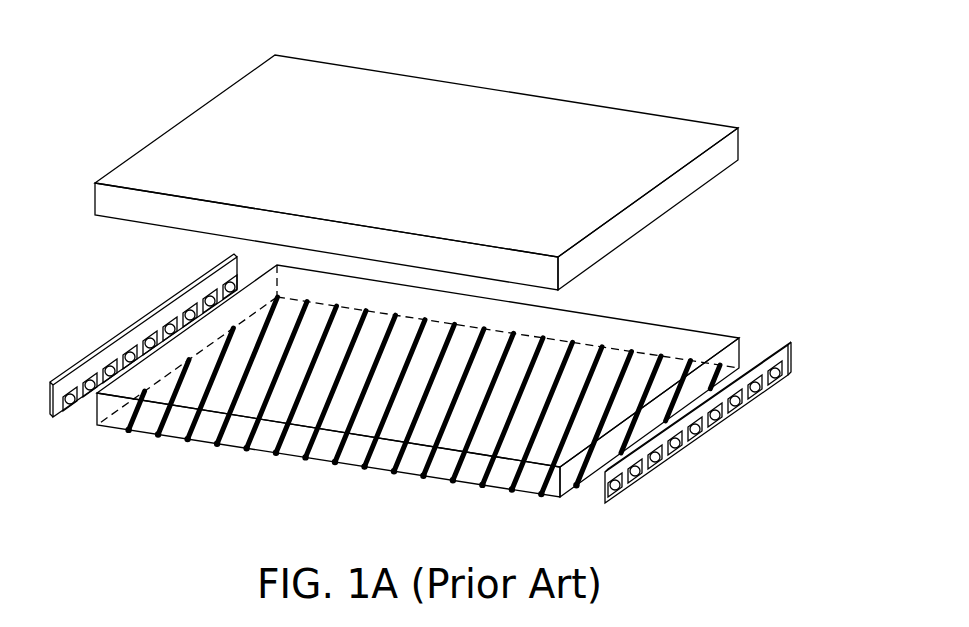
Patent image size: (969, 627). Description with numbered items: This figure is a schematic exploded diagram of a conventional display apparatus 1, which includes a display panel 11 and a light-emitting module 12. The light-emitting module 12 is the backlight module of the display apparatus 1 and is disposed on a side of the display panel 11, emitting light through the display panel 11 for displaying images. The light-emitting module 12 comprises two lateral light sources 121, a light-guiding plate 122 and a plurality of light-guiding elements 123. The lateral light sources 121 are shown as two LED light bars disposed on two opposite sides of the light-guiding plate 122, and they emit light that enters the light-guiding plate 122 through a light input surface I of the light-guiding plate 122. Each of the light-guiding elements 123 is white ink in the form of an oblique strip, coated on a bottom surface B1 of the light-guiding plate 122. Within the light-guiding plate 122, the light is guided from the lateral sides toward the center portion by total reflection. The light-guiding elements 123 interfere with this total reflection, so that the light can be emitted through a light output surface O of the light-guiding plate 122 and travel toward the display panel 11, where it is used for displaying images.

The display apparatus 1 is at (694, 88).
The display panel 11 is at (700, 173).
The light-emitting module 12 is at (314, 470).
The lateral light sources 121 is at (140, 333).
The light-guiding plate 122 is at (682, 327).
The light-guiding elements 123 is at (215, 444).
The light output surface O is at (603, 323).
The light input surface I is at (94, 418).
The bottom surface B1 is at (527, 494).